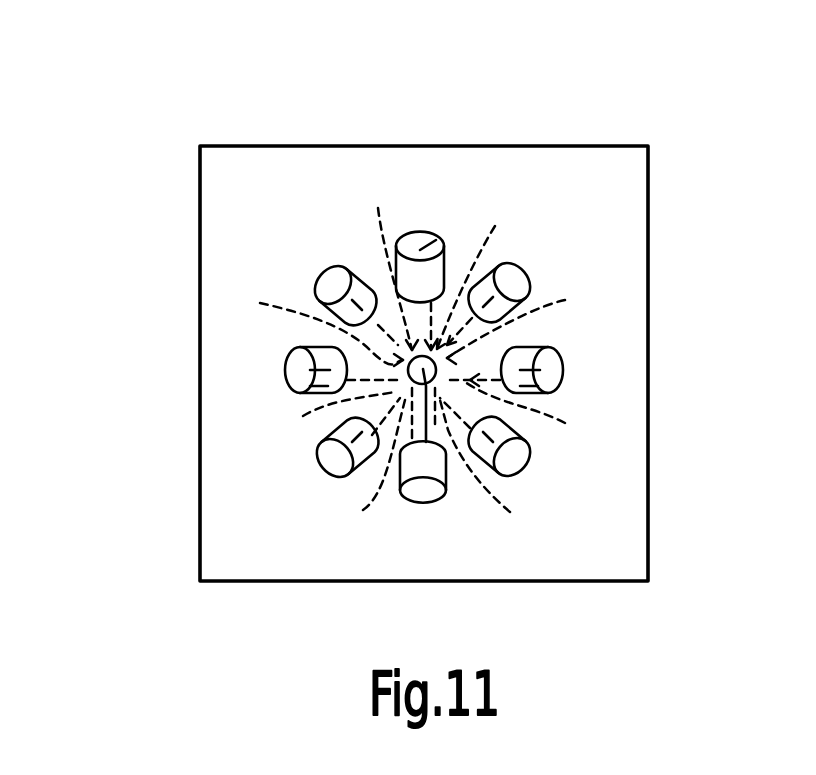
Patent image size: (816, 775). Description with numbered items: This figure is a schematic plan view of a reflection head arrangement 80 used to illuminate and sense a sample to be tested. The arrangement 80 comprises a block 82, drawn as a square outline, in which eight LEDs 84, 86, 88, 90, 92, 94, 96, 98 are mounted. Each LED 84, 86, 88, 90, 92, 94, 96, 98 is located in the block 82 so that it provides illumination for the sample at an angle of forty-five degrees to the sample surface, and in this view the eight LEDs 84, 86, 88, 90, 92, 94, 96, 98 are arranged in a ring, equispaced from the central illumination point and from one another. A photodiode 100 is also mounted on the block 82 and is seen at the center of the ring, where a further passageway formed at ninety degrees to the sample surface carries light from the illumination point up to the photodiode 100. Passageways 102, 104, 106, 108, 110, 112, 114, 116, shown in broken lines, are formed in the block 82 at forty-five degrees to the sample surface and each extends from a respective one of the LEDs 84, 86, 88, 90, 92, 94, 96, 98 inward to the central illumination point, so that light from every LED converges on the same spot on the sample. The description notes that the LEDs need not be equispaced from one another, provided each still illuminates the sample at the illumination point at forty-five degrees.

The reflection head arrangement 80 is at (675, 125).
The block 82 is at (238, 233).
The LED 84 is at (436, 240).
The LED 86 is at (512, 283).
The LED 88 is at (548, 370).
The LED 90 is at (514, 458).
The LED 92 is at (424, 490).
The LED 94 is at (337, 458).
The LED 96 is at (300, 370).
The LED 98 is at (333, 285).
The photodiode 100 is at (446, 478).
The passageway 102 is at (491, 278).
The passageway 104 is at (530, 319).
The passageway 106 is at (539, 413).
The passageway 108 is at (499, 470).
The passageway 110 is at (366, 475).
The passageway 112 is at (328, 420).
The passageway 114 is at (307, 329).
The passageway 116 is at (394, 261).